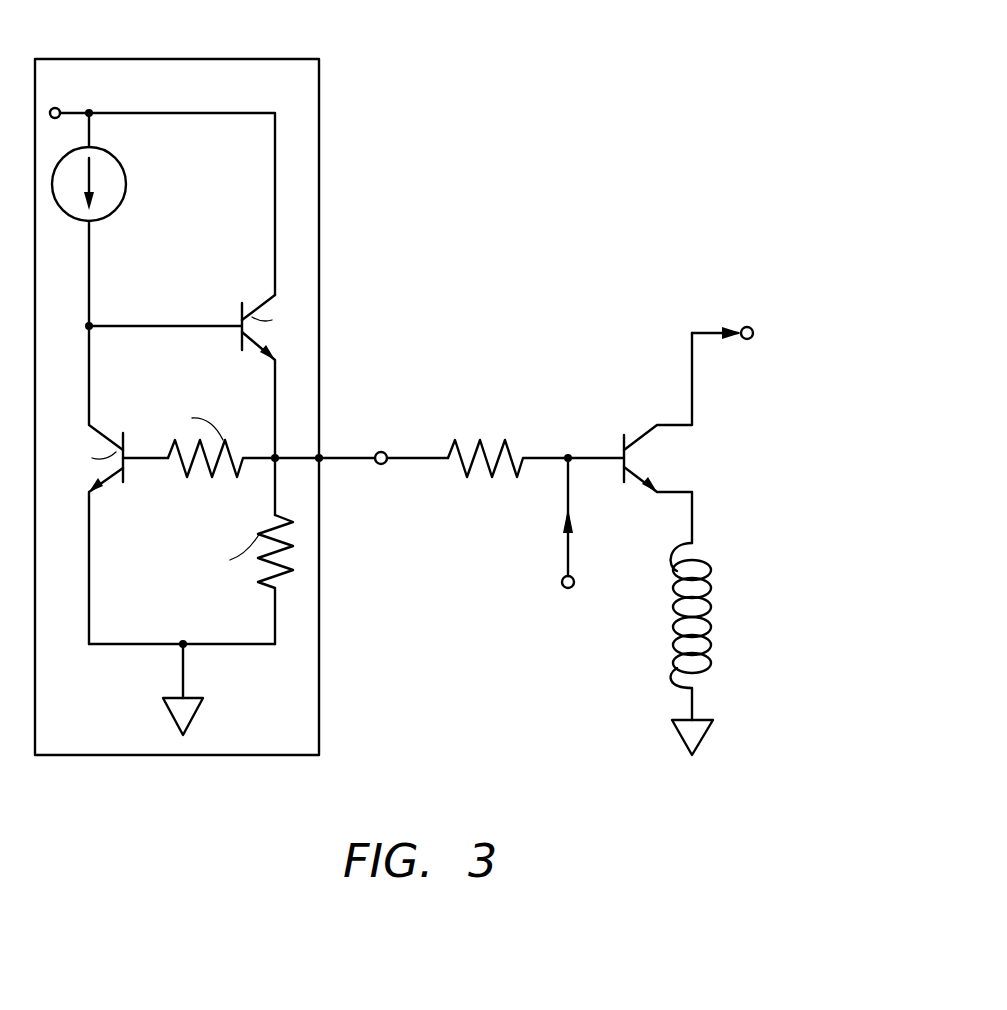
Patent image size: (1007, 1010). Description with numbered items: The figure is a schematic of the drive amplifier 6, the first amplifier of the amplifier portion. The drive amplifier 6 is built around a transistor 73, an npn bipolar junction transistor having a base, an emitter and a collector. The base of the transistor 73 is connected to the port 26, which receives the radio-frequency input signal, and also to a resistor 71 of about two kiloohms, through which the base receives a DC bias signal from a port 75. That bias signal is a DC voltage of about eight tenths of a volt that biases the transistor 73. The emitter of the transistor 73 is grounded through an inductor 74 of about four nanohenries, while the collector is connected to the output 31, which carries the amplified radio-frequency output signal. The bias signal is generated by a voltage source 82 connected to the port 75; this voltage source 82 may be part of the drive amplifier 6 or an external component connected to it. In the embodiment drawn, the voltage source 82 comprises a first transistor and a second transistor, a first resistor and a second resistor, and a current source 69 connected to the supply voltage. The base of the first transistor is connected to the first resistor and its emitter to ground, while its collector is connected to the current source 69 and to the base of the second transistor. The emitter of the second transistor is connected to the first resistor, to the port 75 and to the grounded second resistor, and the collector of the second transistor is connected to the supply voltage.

The voltage source 82 is at (203, 59).
The current source 69 is at (125, 165).
The drive amplifier 6 is at (542, 214).
The resistor 71 is at (481, 441).
The transistor 73 is at (622, 441).
The port 75 is at (386, 464).
The port 26 is at (567, 574).
The output 31 is at (752, 342).
The inductor 74 is at (708, 563).